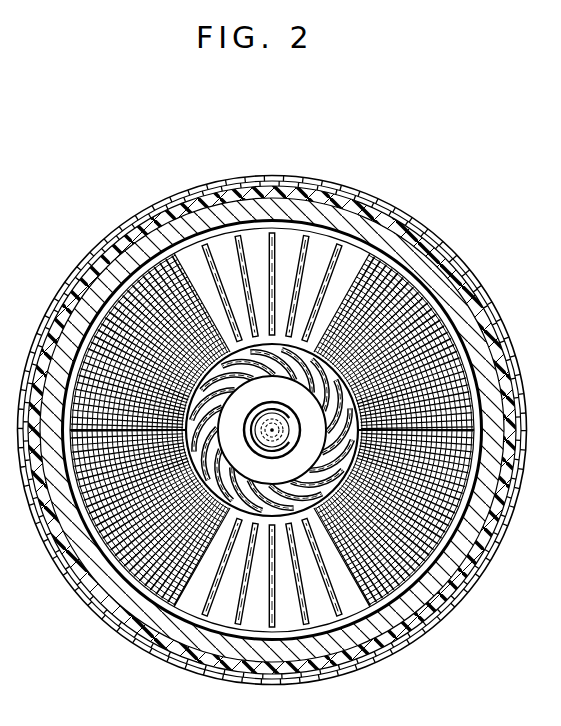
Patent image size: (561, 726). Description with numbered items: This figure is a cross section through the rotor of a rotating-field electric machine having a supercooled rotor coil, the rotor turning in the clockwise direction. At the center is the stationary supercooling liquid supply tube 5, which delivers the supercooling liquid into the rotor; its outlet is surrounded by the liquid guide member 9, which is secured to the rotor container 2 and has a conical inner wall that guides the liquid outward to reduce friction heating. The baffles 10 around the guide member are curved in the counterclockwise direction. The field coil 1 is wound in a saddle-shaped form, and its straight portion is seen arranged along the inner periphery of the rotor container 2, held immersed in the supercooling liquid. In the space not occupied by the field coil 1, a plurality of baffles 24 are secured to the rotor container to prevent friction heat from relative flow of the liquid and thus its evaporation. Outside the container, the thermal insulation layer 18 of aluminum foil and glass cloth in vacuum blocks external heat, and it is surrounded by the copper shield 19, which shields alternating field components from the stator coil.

The field coil 1 is at (421, 283).
The rotor container 2 is at (467, 306).
The supercooling liquid supply tube 5 is at (287, 431).
The liquid guide member 9 is at (241, 449).
The baffles 10 is at (297, 480).
The thermal insulation layer 18 is at (478, 544).
The shield 19 is at (462, 592).
The baffles 24 is at (338, 247).